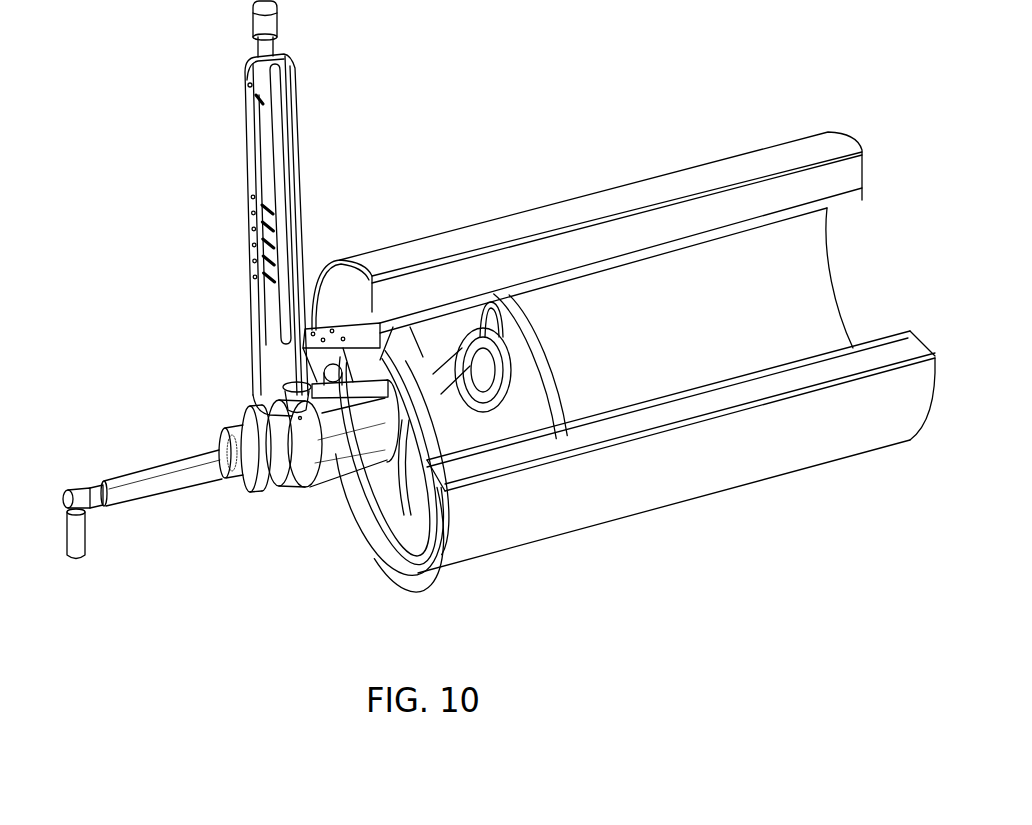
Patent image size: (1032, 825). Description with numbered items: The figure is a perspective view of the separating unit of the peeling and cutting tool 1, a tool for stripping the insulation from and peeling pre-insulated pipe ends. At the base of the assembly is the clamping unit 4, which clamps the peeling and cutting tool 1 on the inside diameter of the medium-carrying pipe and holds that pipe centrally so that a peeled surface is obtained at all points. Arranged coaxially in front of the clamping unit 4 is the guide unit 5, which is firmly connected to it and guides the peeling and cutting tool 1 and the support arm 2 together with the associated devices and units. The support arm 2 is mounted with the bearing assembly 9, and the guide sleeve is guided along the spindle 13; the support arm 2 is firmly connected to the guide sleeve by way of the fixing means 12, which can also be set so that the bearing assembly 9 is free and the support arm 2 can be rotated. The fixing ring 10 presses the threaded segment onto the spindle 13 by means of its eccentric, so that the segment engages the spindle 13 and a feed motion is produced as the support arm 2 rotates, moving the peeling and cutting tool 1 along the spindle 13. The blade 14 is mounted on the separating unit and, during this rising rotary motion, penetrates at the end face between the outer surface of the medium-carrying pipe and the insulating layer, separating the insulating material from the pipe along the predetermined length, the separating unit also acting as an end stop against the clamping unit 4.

The peeling and cutting tool 1 is at (146, 119).
The support arm 2 is at (265, 368).
The clamping unit 4 is at (402, 508).
The guide unit 5 is at (84, 446).
The bearing assembly 9 is at (298, 486).
The fixing ring 10 is at (242, 470).
The fixing means 12 is at (283, 397).
The spindle 13 is at (182, 470).
The blade 14 is at (340, 328).